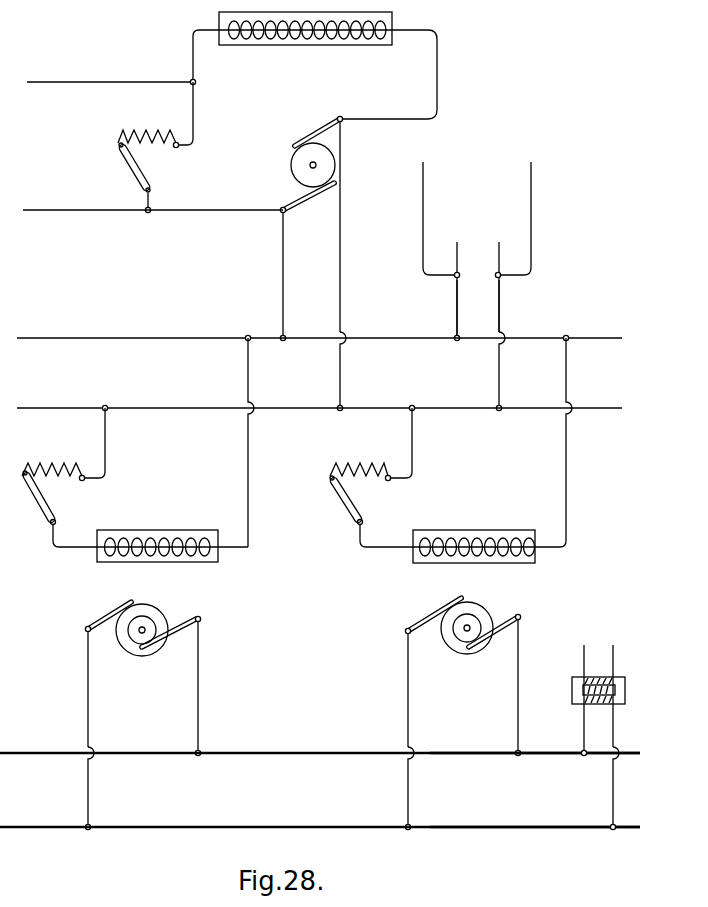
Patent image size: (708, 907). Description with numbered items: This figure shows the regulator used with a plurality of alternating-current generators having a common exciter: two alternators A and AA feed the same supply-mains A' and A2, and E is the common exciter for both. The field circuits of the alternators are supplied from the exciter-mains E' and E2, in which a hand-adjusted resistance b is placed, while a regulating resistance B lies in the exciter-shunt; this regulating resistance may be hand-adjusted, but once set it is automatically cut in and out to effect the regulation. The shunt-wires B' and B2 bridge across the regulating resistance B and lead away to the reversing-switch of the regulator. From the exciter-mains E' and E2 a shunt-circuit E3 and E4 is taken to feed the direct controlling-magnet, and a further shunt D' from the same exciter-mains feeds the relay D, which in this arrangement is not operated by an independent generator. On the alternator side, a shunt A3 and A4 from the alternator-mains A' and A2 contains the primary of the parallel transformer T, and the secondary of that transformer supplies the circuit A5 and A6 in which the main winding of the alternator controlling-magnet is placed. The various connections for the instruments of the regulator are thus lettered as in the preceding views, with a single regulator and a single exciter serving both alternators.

The shunt-wire B2 is at (110, 69).
The regulating resistance B is at (155, 147).
The shunt-wire B' is at (153, 199).
The exciter E is at (313, 211).
The relay D is at (428, 250).
The circuit-wire D' is at (525, 285).
The shunt-circuit wire E3 is at (444, 310).
The shunt-circuit wire E4 is at (510, 345).
The exciter-main E2 is at (319, 326).
The exciter-main E' is at (319, 398).
The hand-adjusted resistance b is at (138, 450).
The alternating-current dynamo A is at (142, 712).
The alternator AA is at (450, 584).
The supply-main A' is at (320, 742).
The supply-main A2 is at (320, 815).
The shunt wire A3 is at (535, 741).
The shunt wire A4 is at (535, 815).
The secondary circuit wire A5 is at (624, 737).
The secondary circuit wire A6 is at (571, 700).
The parallel transformer T is at (587, 690).